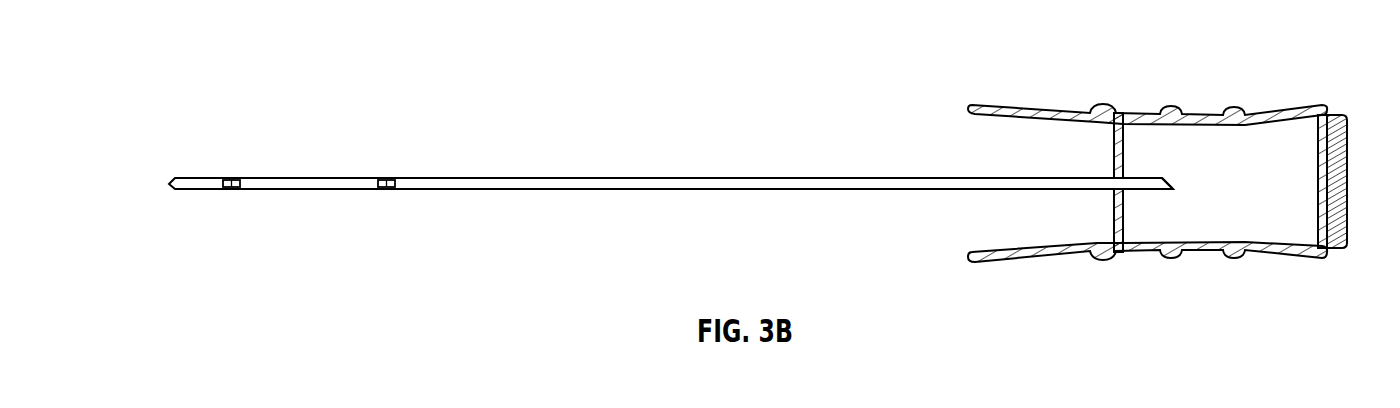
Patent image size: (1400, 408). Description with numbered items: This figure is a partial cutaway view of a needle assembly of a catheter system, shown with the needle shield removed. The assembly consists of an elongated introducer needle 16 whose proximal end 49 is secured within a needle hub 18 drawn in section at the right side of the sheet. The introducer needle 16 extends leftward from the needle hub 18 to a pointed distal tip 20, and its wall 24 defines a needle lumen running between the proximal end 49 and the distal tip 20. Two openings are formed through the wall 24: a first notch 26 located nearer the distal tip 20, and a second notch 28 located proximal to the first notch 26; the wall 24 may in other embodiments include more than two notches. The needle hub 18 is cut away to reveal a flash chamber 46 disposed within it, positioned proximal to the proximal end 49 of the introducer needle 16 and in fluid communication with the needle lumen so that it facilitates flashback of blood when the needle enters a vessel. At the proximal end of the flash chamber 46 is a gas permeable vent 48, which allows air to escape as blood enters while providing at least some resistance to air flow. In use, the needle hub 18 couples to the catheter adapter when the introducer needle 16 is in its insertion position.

The introducer needle 16 is at (685, 164).
The needle hub 18 is at (1181, 156).
The distal tip 20 is at (656, 164).
The wall 24 is at (685, 169).
The first notch 26 is at (232, 180).
The second notch 28 is at (387, 180).
The flash chamber 46 is at (1229, 243).
The gas permeable vent 48 is at (1344, 117).
The proximal end 49 is at (1148, 189).